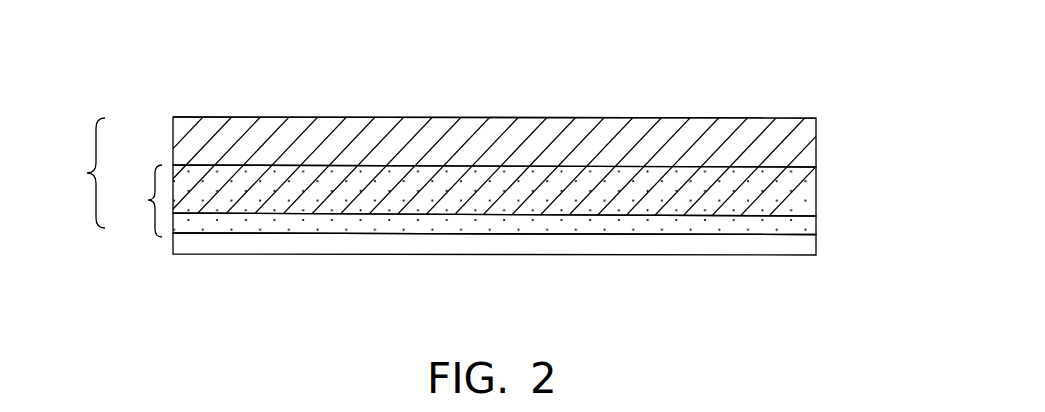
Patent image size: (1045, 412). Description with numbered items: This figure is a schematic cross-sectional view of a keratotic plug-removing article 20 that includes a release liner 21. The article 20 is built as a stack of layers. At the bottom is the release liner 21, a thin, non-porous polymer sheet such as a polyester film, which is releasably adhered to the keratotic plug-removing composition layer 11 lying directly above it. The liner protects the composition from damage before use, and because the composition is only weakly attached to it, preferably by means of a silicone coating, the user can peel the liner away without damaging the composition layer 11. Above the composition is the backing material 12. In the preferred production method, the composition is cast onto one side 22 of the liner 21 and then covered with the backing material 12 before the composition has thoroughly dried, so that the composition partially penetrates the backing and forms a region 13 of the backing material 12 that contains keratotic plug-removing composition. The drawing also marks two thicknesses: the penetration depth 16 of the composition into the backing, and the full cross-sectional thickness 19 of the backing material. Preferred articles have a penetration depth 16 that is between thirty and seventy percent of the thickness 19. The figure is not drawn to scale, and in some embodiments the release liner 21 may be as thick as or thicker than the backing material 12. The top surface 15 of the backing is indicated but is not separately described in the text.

The keratotic plug-removing article 20 is at (492, 183).
The backing material 12 is at (546, 134).
The region of the backing material containing keratotic plug-removing composition 13 is at (544, 181).
The keratotic plug-removing composition layer 11 is at (548, 259).
The release liner 21 is at (524, 295).
The one side of the liner 22 is at (494, 286).
The top surface 15 is at (494, 63).
The cross-sectional thickness of the backing material 19 is at (77, 173).
The penetration depth 16 is at (139, 201).